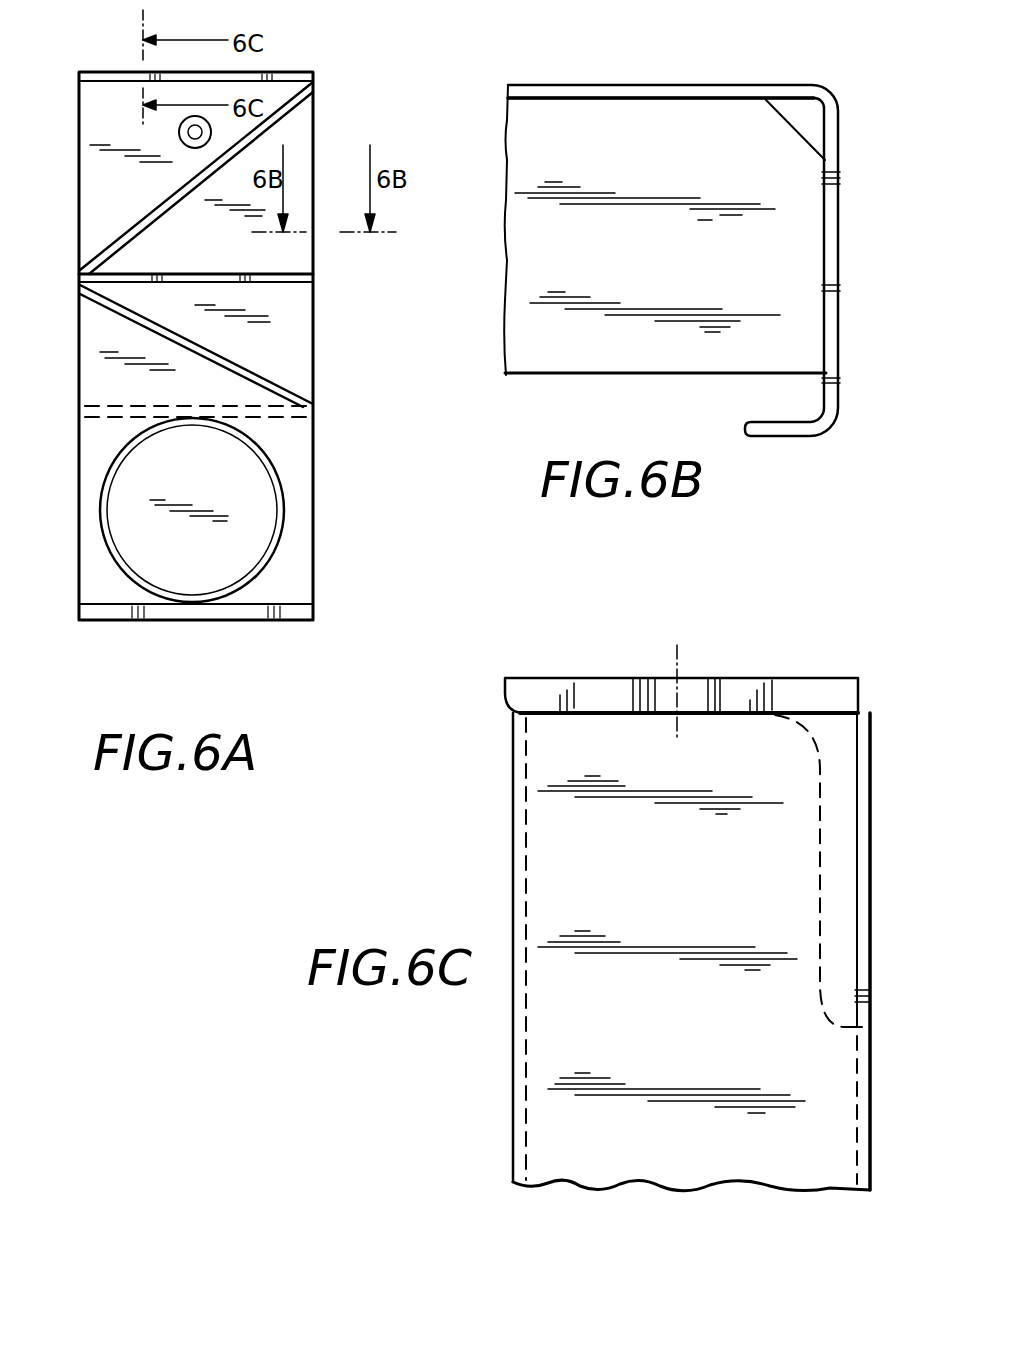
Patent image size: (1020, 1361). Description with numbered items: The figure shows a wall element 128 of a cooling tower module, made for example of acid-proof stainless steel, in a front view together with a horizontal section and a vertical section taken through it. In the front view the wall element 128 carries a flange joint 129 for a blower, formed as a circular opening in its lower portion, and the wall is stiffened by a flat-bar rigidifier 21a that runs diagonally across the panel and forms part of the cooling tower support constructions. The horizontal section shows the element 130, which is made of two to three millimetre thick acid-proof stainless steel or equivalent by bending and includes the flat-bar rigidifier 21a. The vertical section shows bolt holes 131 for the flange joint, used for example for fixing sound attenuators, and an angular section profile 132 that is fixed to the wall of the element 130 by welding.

In FIG. 6A, the wall element 128 is at (313, 72).
In FIG. 6A, the flat-bar rigidifier 21a is at (178, 198).
In FIG. 6B, the flat-bar rigidifier 21a is at (806, 272).
In FIG. 6A, the flange joint 129 is at (190, 580).
In FIG. 6B, the element 130 is at (787, 95).
In FIG. 6C, the bolt holes 131 is at (672, 663).
In FIG. 6C, the angular section profile 132 is at (843, 682).